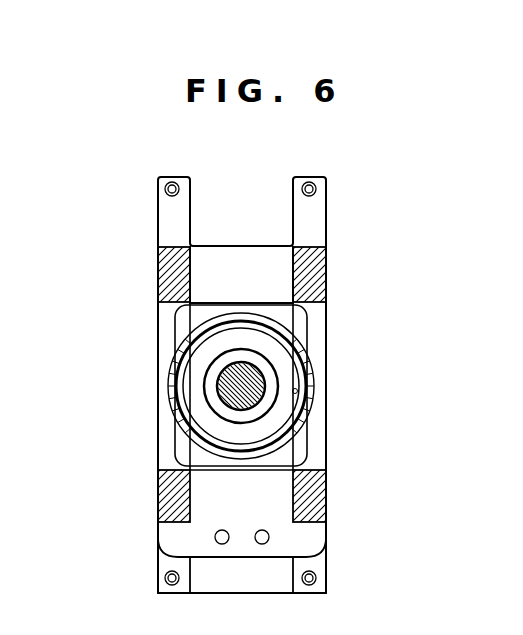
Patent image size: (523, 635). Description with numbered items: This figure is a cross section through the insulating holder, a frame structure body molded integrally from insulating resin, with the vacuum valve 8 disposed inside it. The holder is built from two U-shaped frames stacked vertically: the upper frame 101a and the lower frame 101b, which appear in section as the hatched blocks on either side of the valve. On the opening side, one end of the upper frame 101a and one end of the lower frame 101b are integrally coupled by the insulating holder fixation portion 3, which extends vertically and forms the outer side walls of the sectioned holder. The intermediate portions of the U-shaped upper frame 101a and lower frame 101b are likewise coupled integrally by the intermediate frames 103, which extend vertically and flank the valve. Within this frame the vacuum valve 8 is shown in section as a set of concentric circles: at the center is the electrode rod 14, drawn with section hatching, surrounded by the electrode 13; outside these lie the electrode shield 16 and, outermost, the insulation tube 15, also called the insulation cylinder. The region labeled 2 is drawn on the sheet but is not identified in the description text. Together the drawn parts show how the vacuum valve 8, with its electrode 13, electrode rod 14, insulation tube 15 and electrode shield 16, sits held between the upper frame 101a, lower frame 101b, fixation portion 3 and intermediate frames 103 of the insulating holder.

The housing body 2 is at (243, 257).
The insulating holder fixation portion 3 is at (327, 213).
The vacuum valve 8 is at (239, 458).
The electrode 13 is at (207, 362).
The electrode rod 14 is at (229, 390).
The insulation tube 15 is at (312, 365).
The electrode shield 16 is at (300, 393).
The upper frame 101a is at (315, 276).
The lower frame 101b is at (162, 276).
The intermediate frame 103 is at (172, 447).